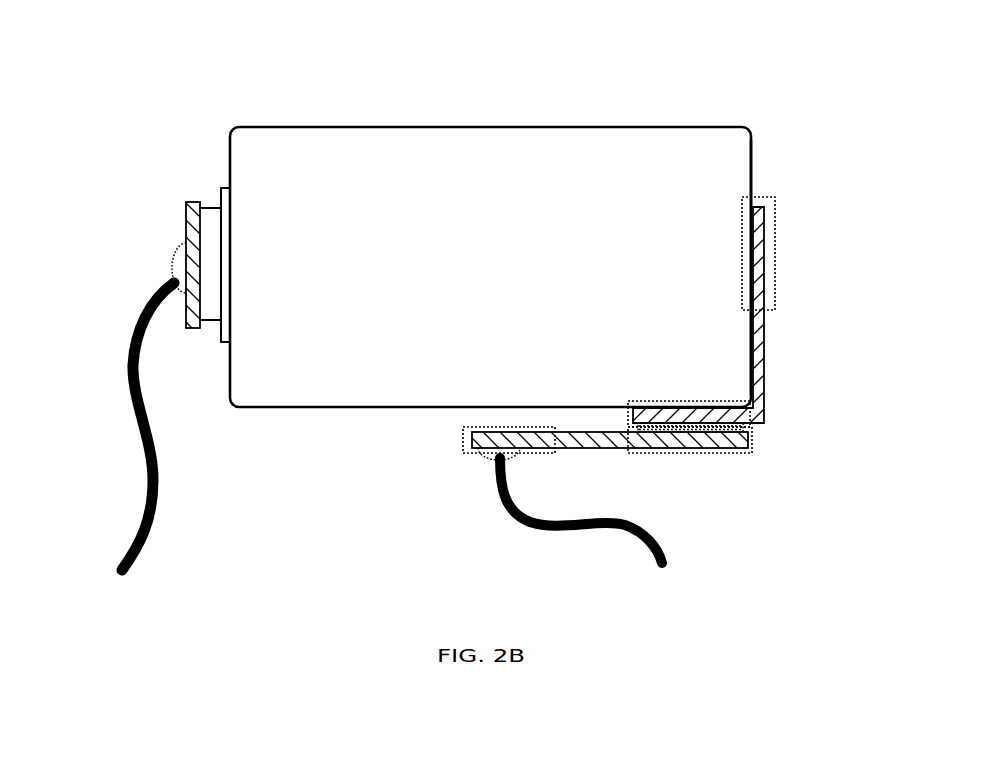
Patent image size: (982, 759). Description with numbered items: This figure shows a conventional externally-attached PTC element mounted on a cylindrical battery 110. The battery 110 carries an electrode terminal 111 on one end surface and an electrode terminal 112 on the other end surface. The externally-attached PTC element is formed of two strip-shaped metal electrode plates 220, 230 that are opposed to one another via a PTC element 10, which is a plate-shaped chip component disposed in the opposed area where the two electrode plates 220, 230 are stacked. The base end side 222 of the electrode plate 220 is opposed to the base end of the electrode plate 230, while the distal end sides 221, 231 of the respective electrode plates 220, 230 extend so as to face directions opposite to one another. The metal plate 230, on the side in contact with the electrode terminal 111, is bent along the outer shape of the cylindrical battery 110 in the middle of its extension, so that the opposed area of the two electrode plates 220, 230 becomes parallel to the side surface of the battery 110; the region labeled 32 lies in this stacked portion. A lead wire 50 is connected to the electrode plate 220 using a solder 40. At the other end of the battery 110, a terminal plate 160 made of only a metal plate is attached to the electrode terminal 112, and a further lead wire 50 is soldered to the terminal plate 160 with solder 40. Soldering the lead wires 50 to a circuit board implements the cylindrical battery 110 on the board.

The cylindrical battery 110 is at (446, 114).
The electrode terminal 111 is at (758, 173).
The electrode terminal 112 is at (210, 223).
The terminal plate 160 is at (186, 216).
The solder 40 is at (172, 262).
The lead wire 50 is at (147, 553).
The electrode plate 230 is at (757, 283).
The distal end side 231 is at (777, 225).
The adhesive layer region 32 is at (639, 400).
The PTC element 10 is at (760, 425).
The electrode plate 220 is at (597, 448).
The distal end side 221 is at (463, 432).
The base end side 222 is at (688, 453).